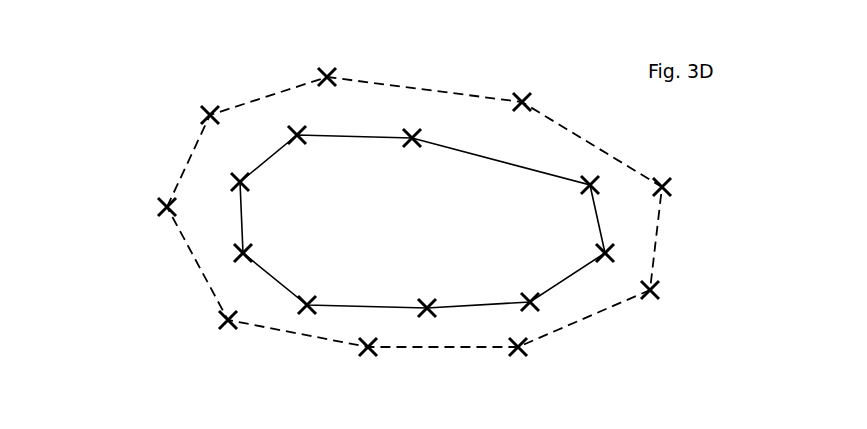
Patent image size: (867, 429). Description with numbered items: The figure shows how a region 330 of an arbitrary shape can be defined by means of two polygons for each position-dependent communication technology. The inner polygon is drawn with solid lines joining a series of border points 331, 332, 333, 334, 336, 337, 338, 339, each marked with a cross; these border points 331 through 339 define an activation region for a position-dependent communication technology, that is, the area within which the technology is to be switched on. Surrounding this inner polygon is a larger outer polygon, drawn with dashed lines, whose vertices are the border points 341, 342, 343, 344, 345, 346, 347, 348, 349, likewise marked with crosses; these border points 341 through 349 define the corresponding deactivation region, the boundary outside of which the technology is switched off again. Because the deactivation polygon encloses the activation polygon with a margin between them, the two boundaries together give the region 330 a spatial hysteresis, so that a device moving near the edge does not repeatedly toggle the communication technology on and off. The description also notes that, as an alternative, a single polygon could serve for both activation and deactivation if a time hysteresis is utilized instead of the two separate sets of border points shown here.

The region 330 is at (124, 130).
The border point 331 is at (247, 186).
The border point 332 is at (301, 140).
The border point 333 is at (412, 144).
The border point 334 is at (584, 191).
The border point 336 is at (525, 297).
The border point 337 is at (427, 302).
The border point 338 is at (312, 300).
The border point 339 is at (248, 250).
The border point 341 is at (160, 205).
The border point 342 is at (203, 110).
The border point 343 is at (320, 75).
The border point 344 is at (528, 99).
The border point 345 is at (668, 183).
The border point 346 is at (656, 287).
The border point 347 is at (524, 352).
The border point 348 is at (362, 350).
The border point 349 is at (222, 323).